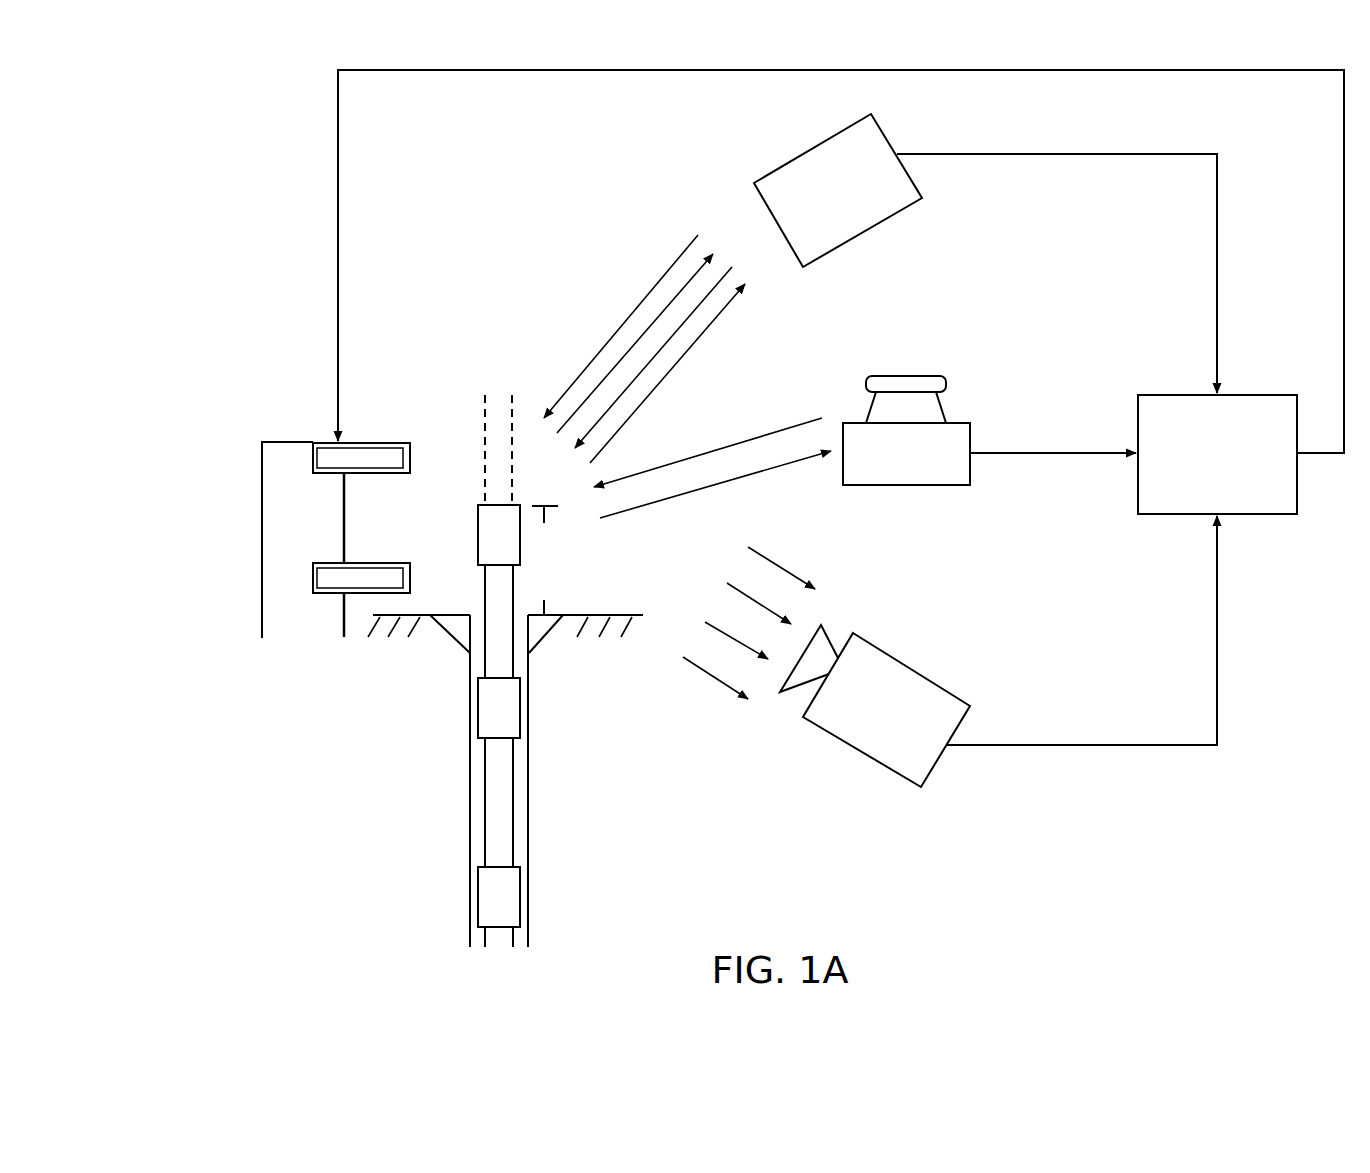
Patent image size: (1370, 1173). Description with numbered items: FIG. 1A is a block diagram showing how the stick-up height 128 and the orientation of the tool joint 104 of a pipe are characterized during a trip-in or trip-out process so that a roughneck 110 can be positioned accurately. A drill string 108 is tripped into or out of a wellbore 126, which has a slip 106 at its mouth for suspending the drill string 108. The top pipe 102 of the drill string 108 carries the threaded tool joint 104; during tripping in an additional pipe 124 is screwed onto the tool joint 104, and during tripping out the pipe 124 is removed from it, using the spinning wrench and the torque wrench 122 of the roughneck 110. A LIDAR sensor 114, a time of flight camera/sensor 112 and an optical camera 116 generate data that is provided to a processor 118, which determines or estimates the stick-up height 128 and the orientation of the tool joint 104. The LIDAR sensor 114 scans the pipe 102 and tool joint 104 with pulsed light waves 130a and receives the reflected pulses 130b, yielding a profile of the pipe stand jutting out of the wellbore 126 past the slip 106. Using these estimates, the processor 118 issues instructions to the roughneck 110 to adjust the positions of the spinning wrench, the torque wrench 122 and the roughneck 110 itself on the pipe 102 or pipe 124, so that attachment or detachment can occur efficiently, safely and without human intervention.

The pipe 102 is at (482, 600).
The tool joint 104 is at (496, 500).
The slip 106 is at (551, 642).
The drill string 108 is at (517, 784).
The roughneck 110 is at (308, 452).
The time of flight camera/sensor 112 is at (838, 188).
The LIDAR sensor 114 is at (906, 415).
The optical camera 116 is at (875, 706).
The processor 118 is at (1217, 454).
The torque wrench 122 is at (308, 574).
The pipe 124 is at (481, 417).
The wellbore 126 is at (466, 839).
The stick-up height 128 is at (623, 560).
The pulsed light waves 130a is at (708, 451).
The reflected pulses 130b is at (715, 484).